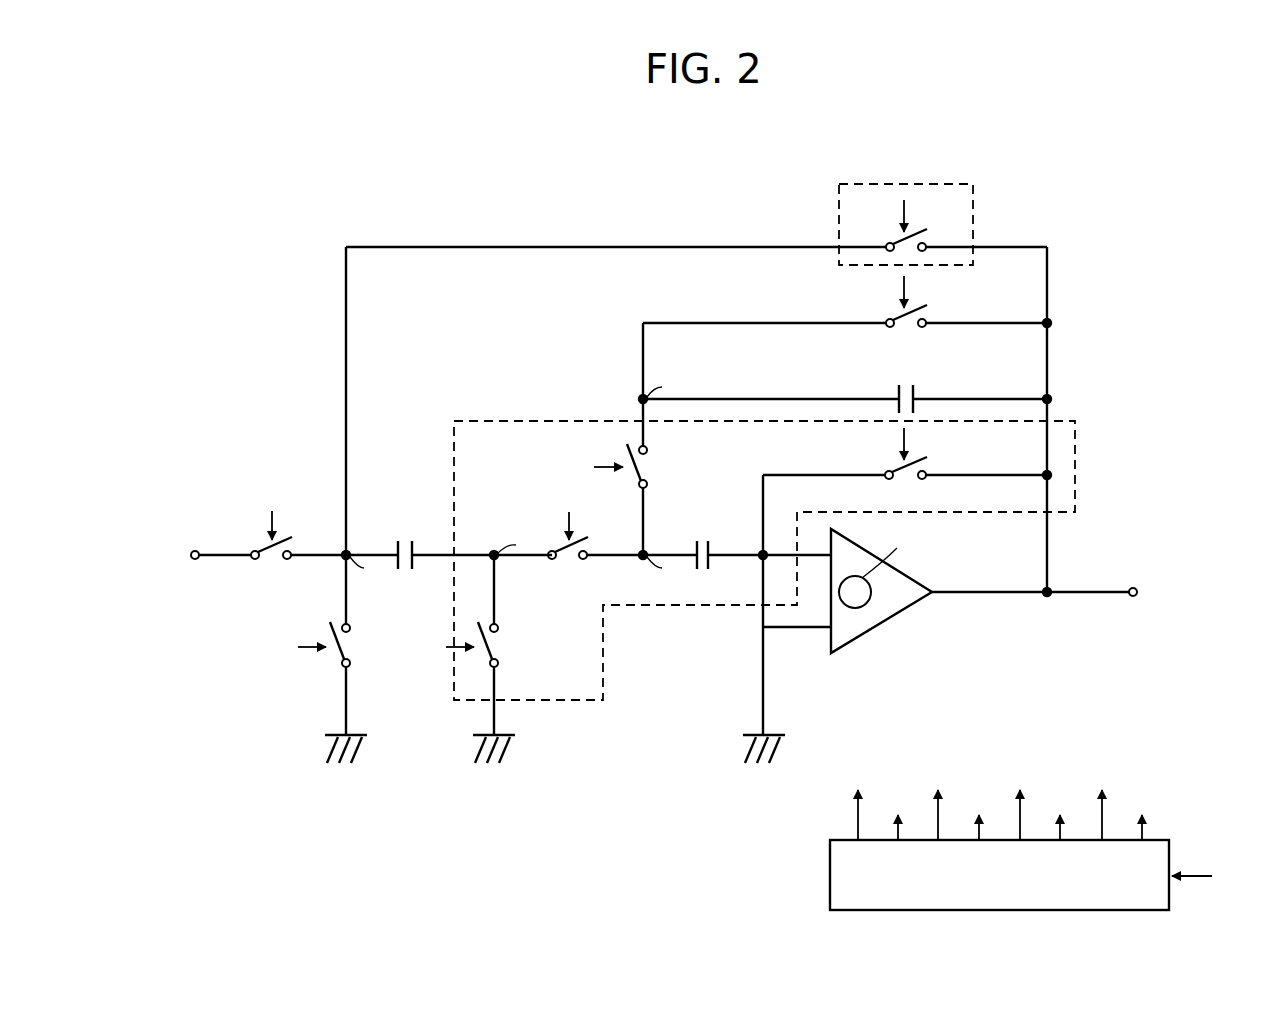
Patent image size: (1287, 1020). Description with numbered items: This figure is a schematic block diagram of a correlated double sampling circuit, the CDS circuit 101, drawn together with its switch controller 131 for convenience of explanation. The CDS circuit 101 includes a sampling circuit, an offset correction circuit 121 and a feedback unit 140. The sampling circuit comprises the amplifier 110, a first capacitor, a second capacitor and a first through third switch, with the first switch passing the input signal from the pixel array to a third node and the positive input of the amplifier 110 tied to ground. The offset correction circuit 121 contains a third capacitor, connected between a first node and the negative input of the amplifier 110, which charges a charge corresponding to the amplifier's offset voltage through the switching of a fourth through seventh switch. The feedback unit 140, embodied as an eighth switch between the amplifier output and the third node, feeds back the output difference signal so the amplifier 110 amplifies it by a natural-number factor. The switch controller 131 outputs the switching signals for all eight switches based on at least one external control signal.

The CDS circuit 101 is at (1187, 135).
The amplifier 110 is at (880, 623).
The offset correction circuit 121 is at (1076, 472).
The switch controller 131 is at (1000, 911).
The feedback unit 140 is at (974, 218).